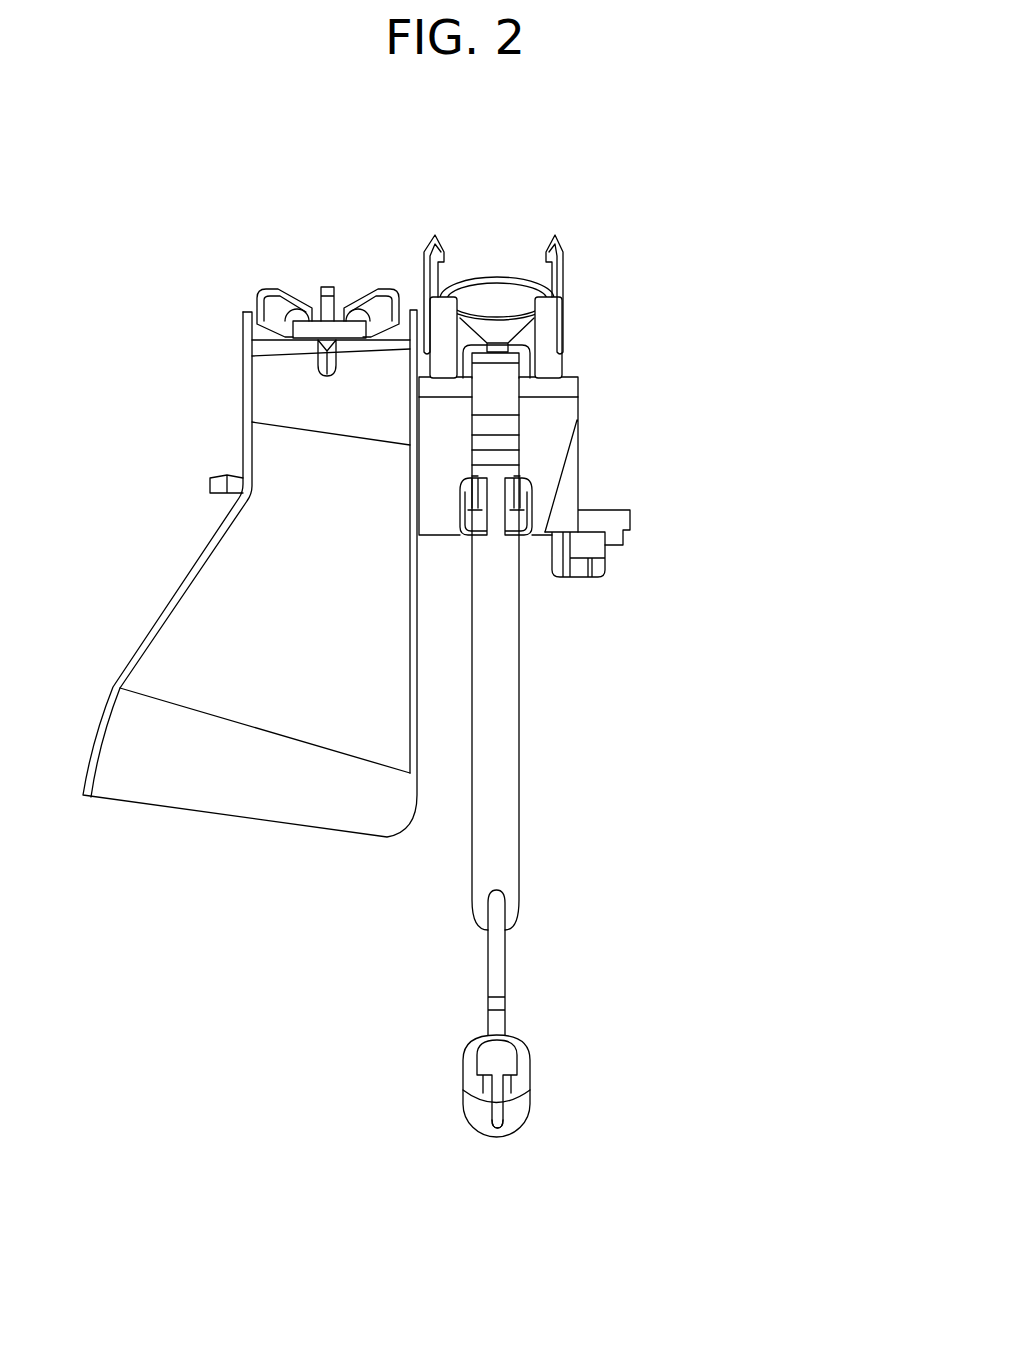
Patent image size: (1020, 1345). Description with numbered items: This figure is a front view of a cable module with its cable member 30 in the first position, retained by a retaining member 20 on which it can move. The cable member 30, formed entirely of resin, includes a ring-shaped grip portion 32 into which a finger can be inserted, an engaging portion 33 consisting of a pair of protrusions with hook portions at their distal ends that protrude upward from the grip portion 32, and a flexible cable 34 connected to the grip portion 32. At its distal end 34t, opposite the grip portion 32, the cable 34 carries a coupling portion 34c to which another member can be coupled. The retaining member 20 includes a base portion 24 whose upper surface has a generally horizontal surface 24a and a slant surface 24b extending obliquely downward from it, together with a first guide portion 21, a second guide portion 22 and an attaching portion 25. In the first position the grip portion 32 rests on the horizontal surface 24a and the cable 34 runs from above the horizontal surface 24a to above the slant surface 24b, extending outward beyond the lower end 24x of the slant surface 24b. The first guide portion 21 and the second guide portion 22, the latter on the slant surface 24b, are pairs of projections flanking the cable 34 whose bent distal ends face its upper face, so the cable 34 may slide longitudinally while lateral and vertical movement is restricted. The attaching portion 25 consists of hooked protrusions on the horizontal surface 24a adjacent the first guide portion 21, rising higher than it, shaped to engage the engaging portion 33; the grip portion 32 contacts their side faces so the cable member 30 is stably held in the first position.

The retaining member 20 is at (597, 377).
The first guide portion 21 is at (478, 341).
The second guide portion 22 is at (482, 482).
The base portion 24 is at (604, 472).
The horizontal surface 24a is at (573, 374).
The slant surface 24b is at (572, 416).
The lower end 24x is at (536, 534).
The attaching portion 25 is at (440, 322).
The cable member 30 is at (558, 798).
The grip portion 32 is at (478, 276).
The engaging portion 33 is at (557, 233).
The cable 34 is at (507, 715).
The coupling portion 34c is at (522, 1065).
The distal end 34t is at (497, 1138).